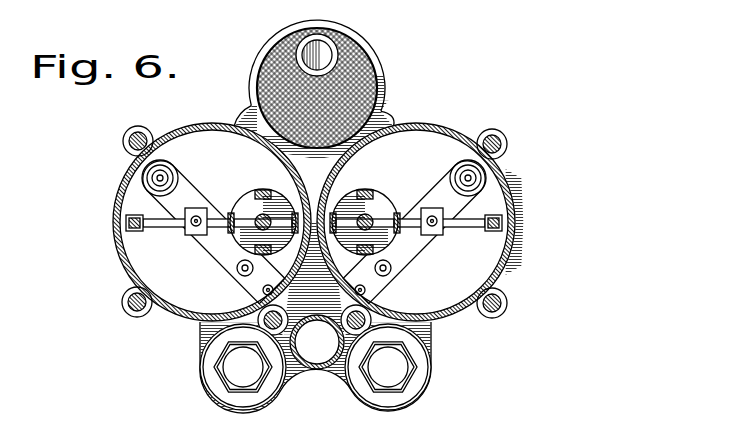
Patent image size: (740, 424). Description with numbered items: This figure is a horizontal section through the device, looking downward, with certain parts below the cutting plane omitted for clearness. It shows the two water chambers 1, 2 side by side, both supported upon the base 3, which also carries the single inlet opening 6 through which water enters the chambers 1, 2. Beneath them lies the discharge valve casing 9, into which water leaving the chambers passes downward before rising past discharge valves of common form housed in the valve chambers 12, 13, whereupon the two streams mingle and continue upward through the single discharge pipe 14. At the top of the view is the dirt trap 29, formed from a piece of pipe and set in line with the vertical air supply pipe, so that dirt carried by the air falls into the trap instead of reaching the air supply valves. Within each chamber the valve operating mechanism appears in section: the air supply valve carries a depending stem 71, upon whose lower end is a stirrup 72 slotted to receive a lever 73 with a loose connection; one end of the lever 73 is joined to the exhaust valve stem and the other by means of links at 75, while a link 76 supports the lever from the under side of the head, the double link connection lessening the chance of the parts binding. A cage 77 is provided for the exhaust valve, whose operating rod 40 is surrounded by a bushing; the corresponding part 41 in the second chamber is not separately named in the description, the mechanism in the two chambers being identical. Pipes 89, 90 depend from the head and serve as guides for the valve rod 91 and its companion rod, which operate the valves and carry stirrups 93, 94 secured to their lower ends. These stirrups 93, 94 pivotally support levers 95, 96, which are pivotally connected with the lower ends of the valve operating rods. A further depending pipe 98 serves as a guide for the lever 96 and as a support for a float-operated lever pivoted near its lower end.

The chamber 1 is at (130, 175).
The chamber 2 is at (506, 174).
The base 3 is at (346, 138).
The inlet opening 6 is at (376, 92).
The discharge valve casing 9 is at (340, 368).
The valve chamber 12 is at (205, 366).
The valve chamber 13 is at (428, 372).
The discharge pipe 14 is at (322, 368).
The dirt trap 29 is at (339, 57).
The operating rod 40 is at (270, 245).
The disc 41 is at (358, 248).
The depending stem 71 is at (199, 238).
The stirrup 72 is at (189, 238).
The lever 73 is at (162, 224).
The links 75 is at (252, 201).
The link 76 is at (128, 223).
The cage 77 is at (262, 200).
The pipe 89 is at (126, 203).
The pipe 90 is at (502, 160).
The valve rod 91 is at (240, 279).
The stirrup 93 is at (170, 166).
The stirrup 94 is at (459, 167).
The lever 95 is at (205, 239).
The lever 96 is at (398, 268).
The pipe 98 is at (387, 277).